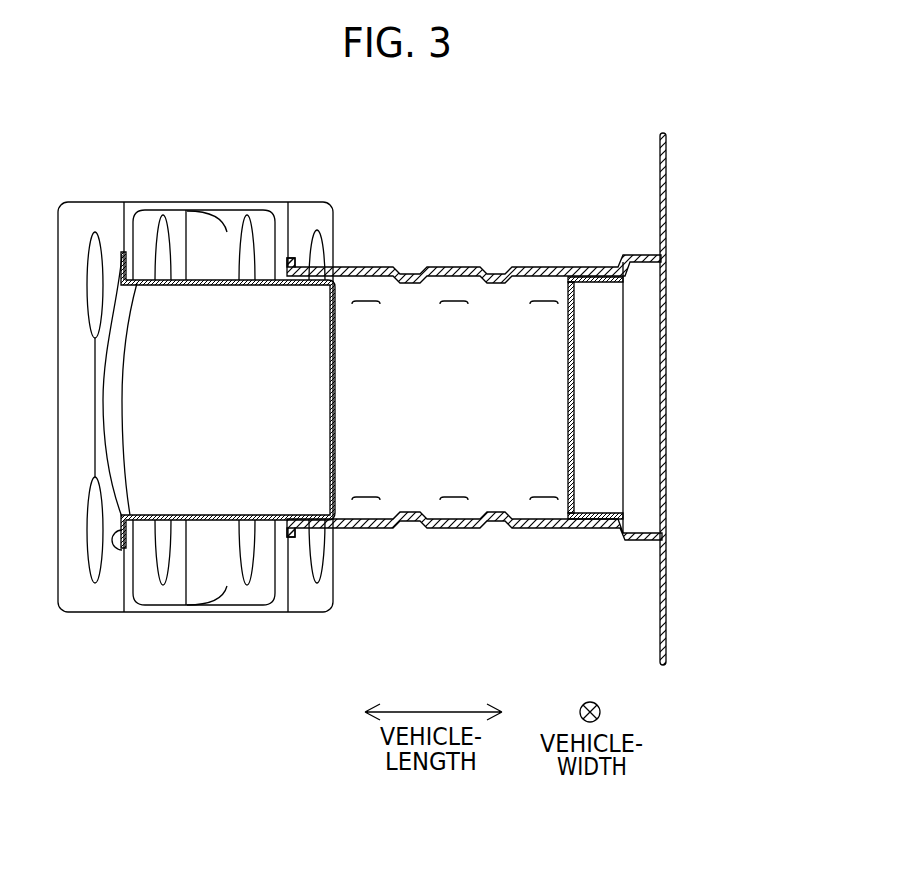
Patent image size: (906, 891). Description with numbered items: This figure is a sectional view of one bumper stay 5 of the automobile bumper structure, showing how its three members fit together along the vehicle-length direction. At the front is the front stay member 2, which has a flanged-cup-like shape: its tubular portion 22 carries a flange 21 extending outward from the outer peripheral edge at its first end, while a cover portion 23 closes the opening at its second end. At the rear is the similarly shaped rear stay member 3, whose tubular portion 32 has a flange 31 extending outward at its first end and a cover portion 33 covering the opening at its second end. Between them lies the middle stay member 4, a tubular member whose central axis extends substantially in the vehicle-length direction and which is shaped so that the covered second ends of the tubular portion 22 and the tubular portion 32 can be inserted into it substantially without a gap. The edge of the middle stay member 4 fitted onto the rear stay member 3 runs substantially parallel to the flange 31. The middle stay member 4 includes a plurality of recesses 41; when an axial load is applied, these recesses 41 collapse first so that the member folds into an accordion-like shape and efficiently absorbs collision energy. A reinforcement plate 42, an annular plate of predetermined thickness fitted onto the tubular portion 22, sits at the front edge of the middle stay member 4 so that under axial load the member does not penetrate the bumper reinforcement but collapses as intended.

The front stay member 2 is at (196, 463).
The flange 21 is at (110, 548).
The tubular portion 22 is at (210, 520).
The cover portion 23 is at (330, 428).
The rear stay member 3 is at (675, 399).
The flange 31 is at (667, 217).
The tubular portion 32 is at (598, 284).
The cover portion 33 is at (656, 397).
The middle stay member 4 is at (474, 380).
The recesses 41 is at (543, 500).
The reinforcement plate 42 is at (295, 258).
The bumper stay 5 is at (580, 113).